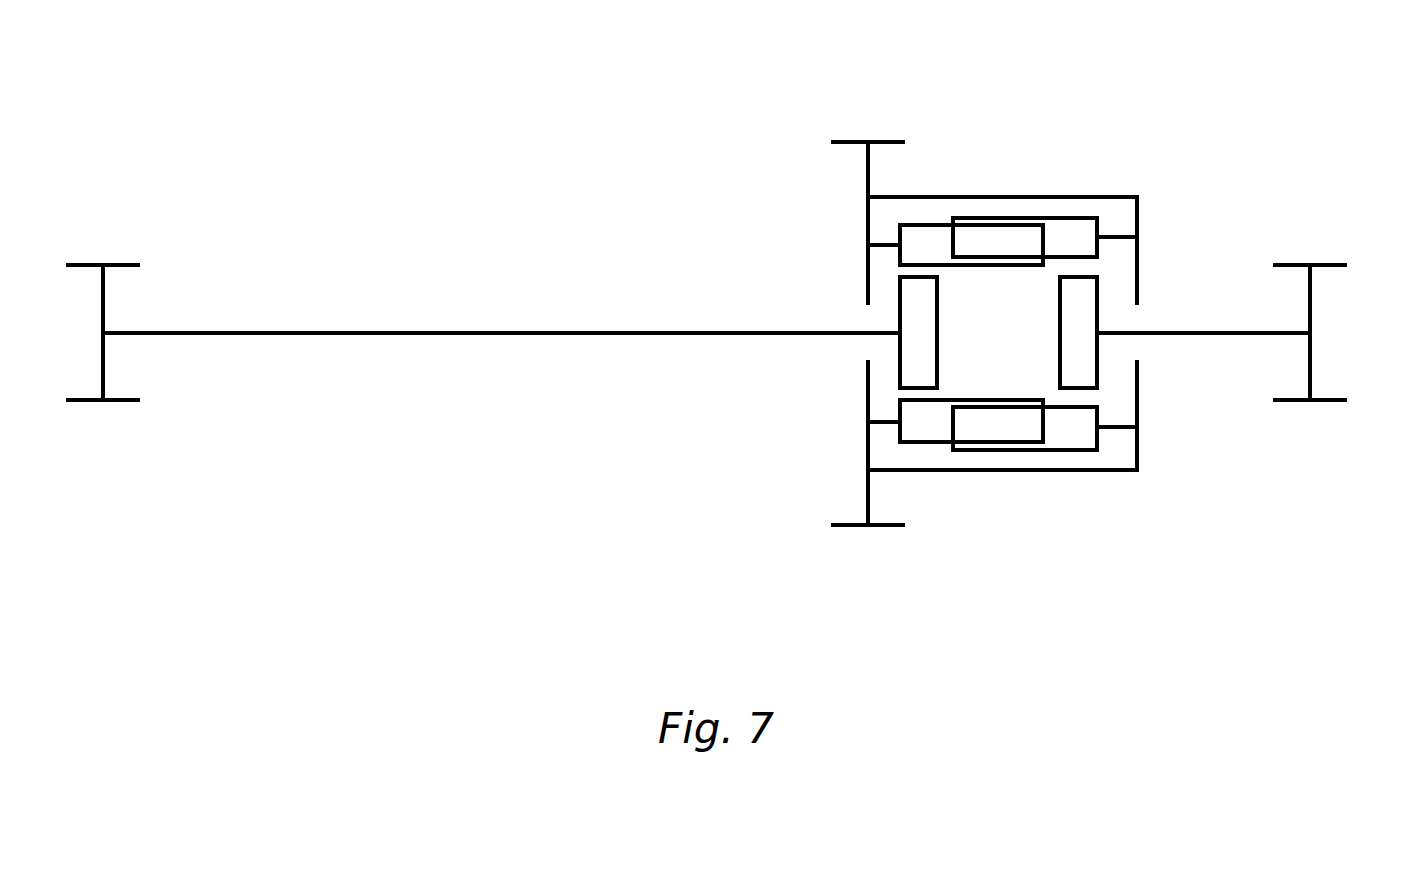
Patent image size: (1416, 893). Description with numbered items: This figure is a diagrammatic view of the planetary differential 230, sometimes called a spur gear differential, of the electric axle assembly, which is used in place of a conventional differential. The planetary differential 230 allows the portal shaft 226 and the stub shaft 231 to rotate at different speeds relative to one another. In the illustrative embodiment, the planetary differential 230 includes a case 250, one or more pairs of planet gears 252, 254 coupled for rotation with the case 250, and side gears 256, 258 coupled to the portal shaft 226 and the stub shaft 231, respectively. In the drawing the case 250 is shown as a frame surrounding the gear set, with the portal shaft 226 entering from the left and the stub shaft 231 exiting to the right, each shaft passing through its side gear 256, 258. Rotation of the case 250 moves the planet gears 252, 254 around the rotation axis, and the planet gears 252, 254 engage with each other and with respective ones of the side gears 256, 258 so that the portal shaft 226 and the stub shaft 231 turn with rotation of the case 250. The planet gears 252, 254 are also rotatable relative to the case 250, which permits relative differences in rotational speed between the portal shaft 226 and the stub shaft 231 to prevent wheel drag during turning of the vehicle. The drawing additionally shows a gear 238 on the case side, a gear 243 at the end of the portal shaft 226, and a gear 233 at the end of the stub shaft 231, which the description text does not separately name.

The portal shaft 226 is at (378, 316).
The planetary differential 230 is at (1110, 156).
The stub shaft 231 is at (1203, 343).
The output gear 233 is at (1303, 410).
The gear 238 is at (812, 135).
The input gear 243 is at (126, 414).
The case 250 is at (980, 188).
The planet gear 252 is at (928, 448).
The planet gear 254 is at (1108, 445).
The side gear 256 is at (894, 312).
The side gear 258 is at (1106, 318).